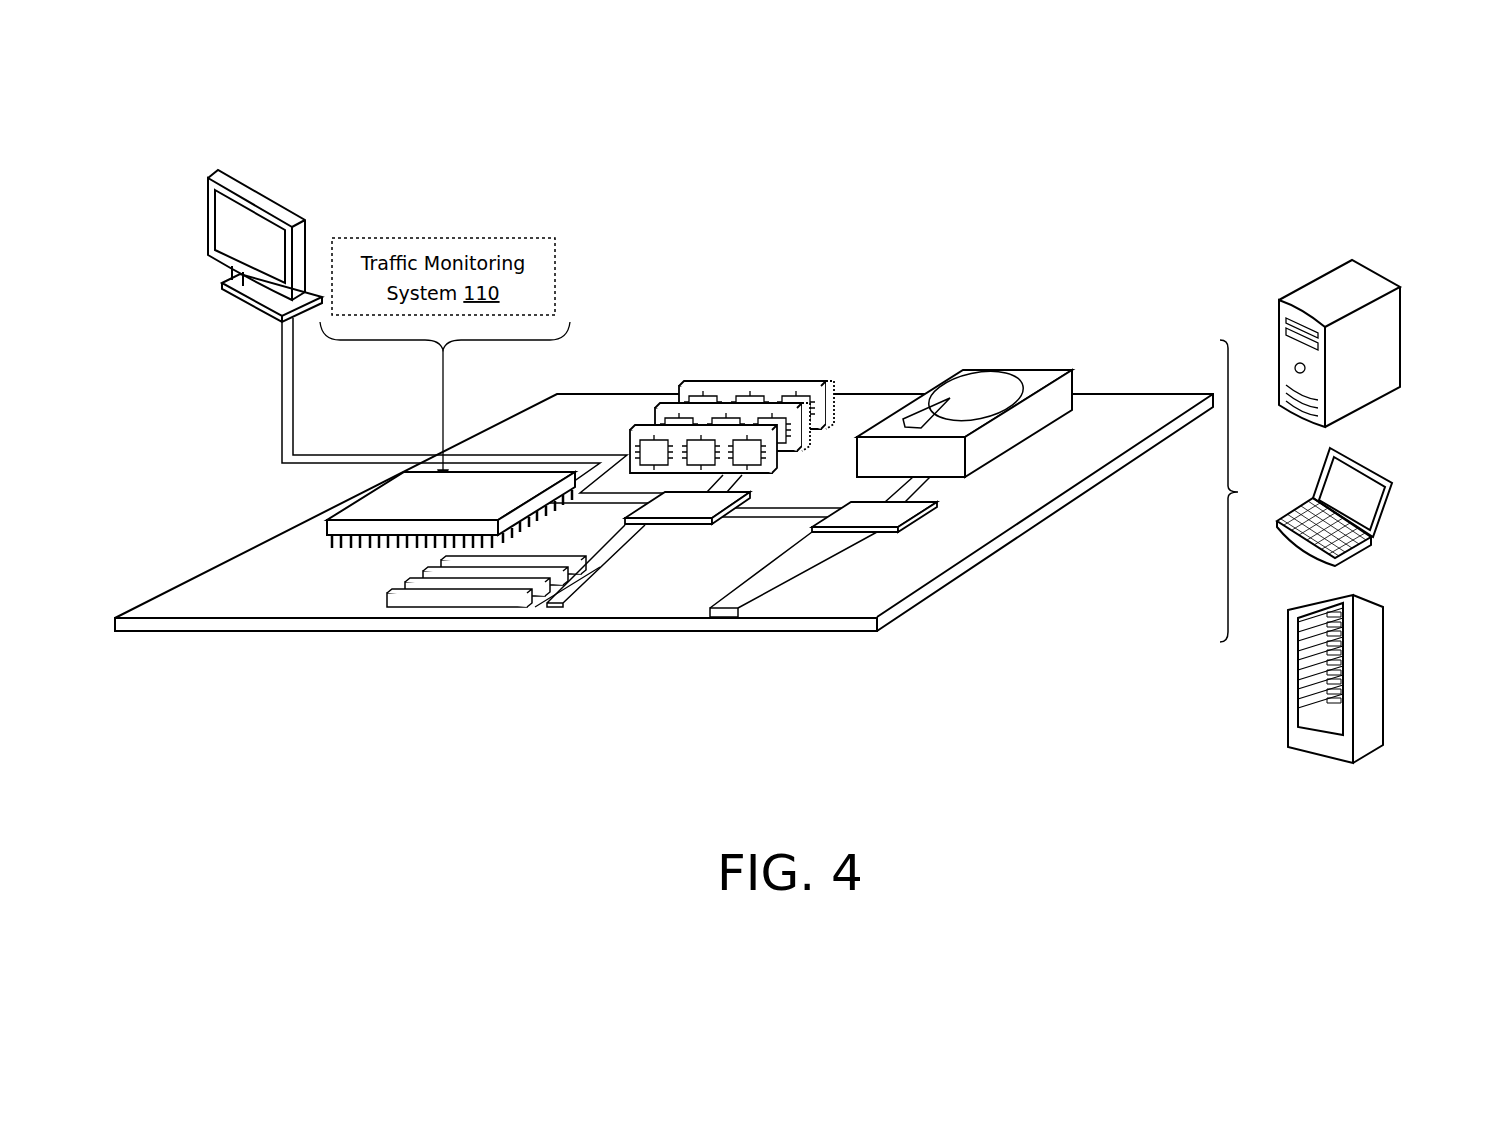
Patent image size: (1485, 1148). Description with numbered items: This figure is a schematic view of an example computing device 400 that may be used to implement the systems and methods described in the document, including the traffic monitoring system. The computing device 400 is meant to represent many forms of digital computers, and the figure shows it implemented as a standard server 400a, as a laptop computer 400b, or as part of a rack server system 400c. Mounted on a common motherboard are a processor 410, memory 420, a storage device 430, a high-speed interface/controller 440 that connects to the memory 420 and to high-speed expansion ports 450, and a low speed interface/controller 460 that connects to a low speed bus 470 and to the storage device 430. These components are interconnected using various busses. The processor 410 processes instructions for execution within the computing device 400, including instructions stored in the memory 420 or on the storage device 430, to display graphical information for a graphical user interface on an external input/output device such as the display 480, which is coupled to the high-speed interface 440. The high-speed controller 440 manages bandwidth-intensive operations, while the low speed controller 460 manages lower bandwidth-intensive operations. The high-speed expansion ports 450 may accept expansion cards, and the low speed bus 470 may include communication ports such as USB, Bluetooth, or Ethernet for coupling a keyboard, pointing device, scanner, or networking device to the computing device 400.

The computing device 400 is at (1031, 140).
The standard server 400a is at (1310, 284).
The laptop computer 400b is at (1374, 466).
The rack server system 400c is at (1377, 655).
The processor 410 is at (327, 520).
The memory 420 is at (746, 384).
The storage device 430 is at (1012, 368).
The high-speed interface/controller 440 is at (693, 525).
The high-speed expansion ports 450 is at (387, 597).
The low speed interface/controller 460 is at (863, 505).
The low speed bus 470 is at (745, 619).
The display 480 is at (208, 226).